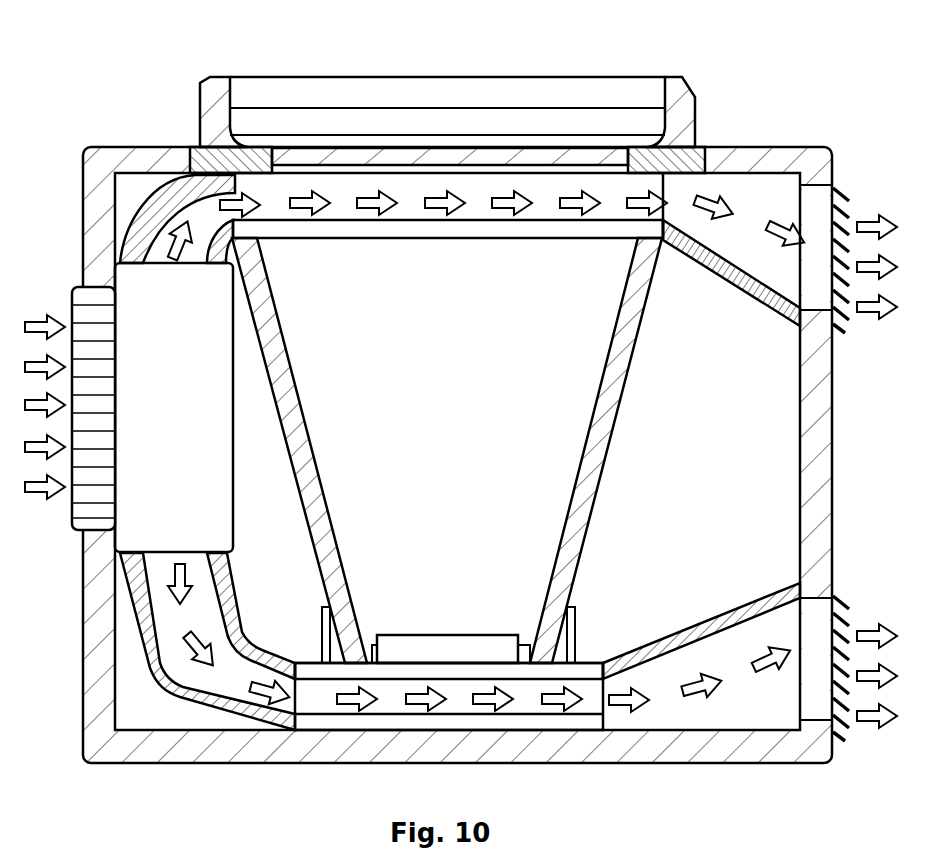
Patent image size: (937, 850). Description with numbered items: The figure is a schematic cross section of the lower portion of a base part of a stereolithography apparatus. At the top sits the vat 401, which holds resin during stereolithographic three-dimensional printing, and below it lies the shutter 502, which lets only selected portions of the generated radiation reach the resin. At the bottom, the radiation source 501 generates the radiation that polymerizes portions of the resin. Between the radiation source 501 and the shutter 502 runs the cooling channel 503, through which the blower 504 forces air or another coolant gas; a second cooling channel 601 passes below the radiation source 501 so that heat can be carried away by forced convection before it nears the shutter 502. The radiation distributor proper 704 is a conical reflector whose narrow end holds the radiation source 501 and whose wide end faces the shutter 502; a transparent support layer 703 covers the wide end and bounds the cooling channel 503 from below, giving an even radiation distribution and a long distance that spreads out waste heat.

The vat 401 is at (675, 74).
The shutter 502 is at (509, 160).
The cooling channel 503 is at (481, 212).
The transparent support layer 703 is at (318, 228).
The radiation distributor proper 704 is at (574, 496).
The blower 504 is at (223, 493).
The cooling channel 601 is at (397, 676).
The radiation source 501 is at (487, 635).